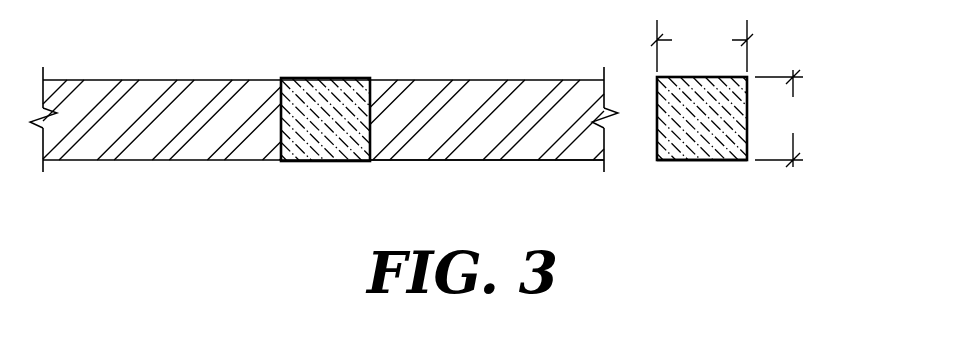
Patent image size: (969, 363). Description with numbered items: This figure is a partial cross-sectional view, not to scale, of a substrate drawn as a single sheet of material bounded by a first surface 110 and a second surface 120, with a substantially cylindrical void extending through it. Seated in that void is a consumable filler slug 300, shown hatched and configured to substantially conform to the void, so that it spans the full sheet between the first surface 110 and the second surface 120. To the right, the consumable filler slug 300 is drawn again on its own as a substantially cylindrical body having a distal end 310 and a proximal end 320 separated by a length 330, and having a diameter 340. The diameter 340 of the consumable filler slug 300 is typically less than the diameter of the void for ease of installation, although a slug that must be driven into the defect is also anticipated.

The first surface 110 is at (400, 80).
The second surface 120 is at (403, 160).
The consumable filler slug 300 is at (281, 161).
The distal end 310 is at (747, 77).
The proximal end 320 is at (680, 161).
The length 330 is at (789, 118).
The diameter 340 is at (702, 40).